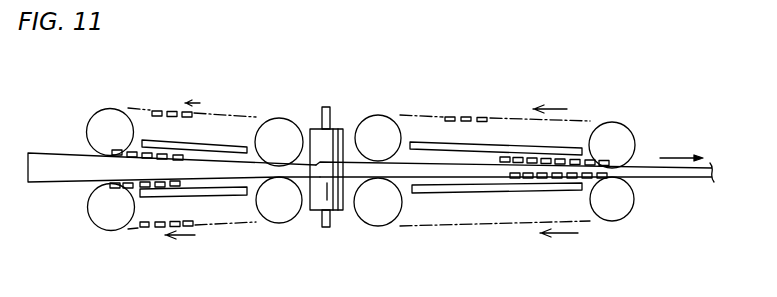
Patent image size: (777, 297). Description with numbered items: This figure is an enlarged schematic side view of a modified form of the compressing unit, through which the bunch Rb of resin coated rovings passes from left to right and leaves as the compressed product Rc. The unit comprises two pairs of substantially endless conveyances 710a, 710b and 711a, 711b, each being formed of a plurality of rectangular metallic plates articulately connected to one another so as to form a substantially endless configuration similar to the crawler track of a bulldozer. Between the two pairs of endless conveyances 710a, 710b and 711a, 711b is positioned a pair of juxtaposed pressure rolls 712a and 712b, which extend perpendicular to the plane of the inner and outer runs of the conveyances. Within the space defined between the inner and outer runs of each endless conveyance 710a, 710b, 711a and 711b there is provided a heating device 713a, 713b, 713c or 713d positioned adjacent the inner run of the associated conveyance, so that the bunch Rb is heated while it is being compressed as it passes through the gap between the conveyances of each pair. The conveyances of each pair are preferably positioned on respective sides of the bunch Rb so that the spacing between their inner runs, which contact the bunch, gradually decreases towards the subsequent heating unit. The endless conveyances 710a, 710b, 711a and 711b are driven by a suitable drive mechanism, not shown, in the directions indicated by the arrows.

The bunch of resin coated rovings Rb is at (52, 162).
The web / ribbon exiting Rc is at (643, 168).
The endless conveyance 710a is at (172, 106).
The endless conveyance 710b is at (220, 253).
The endless conveyance 711a is at (505, 119).
The endless conveyance 711b is at (520, 222).
The pressure roll 712a is at (318, 135).
The pressure roll 712b is at (376, 133).
The heating device 713a is at (197, 148).
The heating device 713b is at (153, 196).
The heating device 713c is at (440, 147).
The heating device 713d is at (462, 191).